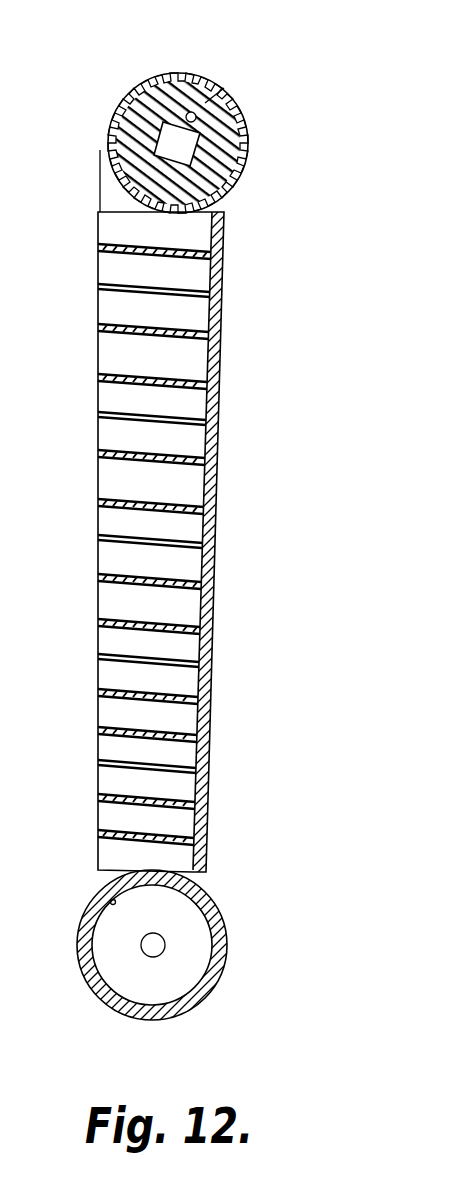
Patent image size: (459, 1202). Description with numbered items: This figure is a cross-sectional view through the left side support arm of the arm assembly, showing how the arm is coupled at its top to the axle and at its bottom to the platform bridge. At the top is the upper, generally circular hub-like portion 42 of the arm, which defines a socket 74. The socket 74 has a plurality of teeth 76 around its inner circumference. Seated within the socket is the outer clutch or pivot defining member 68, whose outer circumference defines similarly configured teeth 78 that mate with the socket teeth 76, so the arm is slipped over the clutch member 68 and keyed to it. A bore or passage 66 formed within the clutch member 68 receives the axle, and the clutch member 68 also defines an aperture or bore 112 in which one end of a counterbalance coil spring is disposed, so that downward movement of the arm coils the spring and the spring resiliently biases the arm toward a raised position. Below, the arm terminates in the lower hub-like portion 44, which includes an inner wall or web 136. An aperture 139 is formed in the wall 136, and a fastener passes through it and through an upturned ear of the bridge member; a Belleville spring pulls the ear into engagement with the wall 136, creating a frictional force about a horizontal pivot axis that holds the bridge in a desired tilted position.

The upper hub-like portion 42 is at (157, 74).
The lower hub-like portion 44 is at (210, 903).
The bore 66 is at (183, 142).
The outer clutch 68 is at (213, 120).
The socket 74 is at (122, 127).
The teeth 76 is at (140, 100).
The teeth 78 is at (240, 188).
The aperture 112 is at (197, 111).
The inner wall 136 is at (113, 958).
The aperture 139 is at (157, 947).